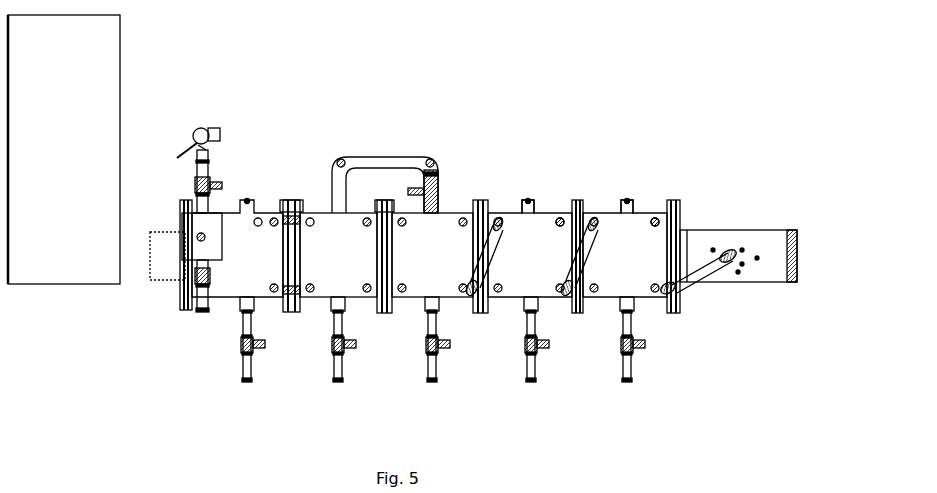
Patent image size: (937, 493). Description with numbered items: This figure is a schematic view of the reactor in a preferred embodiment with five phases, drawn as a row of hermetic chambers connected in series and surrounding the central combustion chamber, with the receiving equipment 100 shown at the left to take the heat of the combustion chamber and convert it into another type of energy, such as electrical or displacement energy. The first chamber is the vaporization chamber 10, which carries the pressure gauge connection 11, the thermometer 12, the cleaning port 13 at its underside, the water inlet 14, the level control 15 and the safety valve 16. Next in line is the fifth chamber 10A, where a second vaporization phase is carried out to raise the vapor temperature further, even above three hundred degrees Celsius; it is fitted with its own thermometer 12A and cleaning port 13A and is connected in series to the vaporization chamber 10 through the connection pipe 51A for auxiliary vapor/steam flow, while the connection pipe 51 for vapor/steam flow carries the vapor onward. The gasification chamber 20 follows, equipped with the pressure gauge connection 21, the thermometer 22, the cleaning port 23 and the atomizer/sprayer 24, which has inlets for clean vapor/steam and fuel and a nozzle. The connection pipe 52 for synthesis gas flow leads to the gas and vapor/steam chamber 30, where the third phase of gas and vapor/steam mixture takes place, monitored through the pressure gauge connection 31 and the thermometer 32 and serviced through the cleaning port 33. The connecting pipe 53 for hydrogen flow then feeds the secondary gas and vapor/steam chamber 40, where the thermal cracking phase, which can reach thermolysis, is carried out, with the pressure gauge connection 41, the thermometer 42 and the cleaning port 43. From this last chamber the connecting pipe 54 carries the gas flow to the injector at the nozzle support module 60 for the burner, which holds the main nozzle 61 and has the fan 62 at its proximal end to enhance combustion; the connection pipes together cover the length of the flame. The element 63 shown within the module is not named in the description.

The receiving equipment 100 is at (50, 77).
The vaporization chamber 10 is at (232, 248).
The fifth chamber 10A is at (338, 255).
The gasification chamber 20 is at (432, 255).
The gas and vapor/steam chamber 30 is at (530, 248).
The secondary gas and vapor/steam chamber 40 is at (625, 248).
The pressure gauge connection 11 is at (218, 170).
The thermometer 12 is at (265, 205).
The thermometer 12A is at (367, 205).
The cleaning port 13 is at (262, 362).
The cleaning port 13A is at (358, 362).
The water inlet 14 is at (196, 322).
The level control 15 is at (193, 248).
The safety valve 16 is at (176, 134).
The pressure gauge connection 21 is at (398, 208).
The thermometer 22 is at (460, 205).
The cleaning port 23 is at (450, 362).
The atomizer/sprayer 24 is at (411, 185).
The pressure gauge connection 31 is at (527, 200).
The thermometer 32 is at (557, 210).
The cleaning port 33 is at (543, 362).
The pressure gauge connection 41 is at (626, 200).
The thermometer 42 is at (656, 210).
The cleaning port 43 is at (645, 362).
The connection pipe for vapor/steam flow 51 is at (386, 150).
The connection pipe for auxiliary vapor/steam flow 51A is at (289, 200).
The connection pipe for synthesis gas flow 52 is at (496, 210).
The connecting pipe for hydrogen flow 53 is at (592, 210).
The connecting pipe for gas flow to injector 54 is at (728, 240).
The nozzle support module 60 is at (773, 230).
The main nozzle 61 is at (740, 274).
The fan 62 is at (793, 228).
The outlet pipe 63 is at (711, 240).